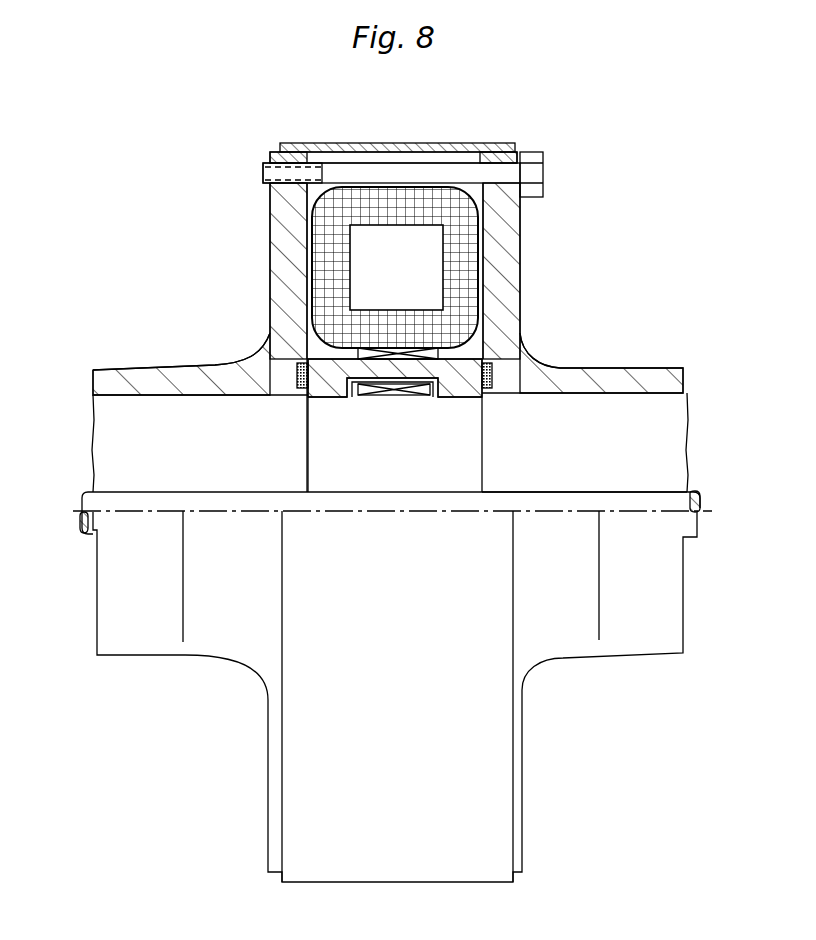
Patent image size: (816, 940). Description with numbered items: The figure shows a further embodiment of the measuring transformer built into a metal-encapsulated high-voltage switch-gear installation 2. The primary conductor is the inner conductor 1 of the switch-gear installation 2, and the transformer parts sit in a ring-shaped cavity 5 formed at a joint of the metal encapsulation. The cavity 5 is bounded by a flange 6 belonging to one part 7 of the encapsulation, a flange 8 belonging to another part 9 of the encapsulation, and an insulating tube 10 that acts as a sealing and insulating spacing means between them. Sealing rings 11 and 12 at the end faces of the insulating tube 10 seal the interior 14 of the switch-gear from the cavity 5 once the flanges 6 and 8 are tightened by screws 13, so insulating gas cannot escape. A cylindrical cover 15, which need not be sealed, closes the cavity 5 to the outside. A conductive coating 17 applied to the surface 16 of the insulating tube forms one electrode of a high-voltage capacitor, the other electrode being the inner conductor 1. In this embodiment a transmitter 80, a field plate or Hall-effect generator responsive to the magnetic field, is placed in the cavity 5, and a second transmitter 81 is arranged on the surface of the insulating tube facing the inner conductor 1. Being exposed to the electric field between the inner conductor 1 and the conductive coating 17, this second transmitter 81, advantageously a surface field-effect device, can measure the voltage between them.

The inner conductor 1 is at (670, 497).
The high-voltage switch-gear installation 2 is at (652, 405).
The ring-shaped cavity 5 is at (470, 343).
The flange 6 is at (502, 228).
The part of the metal encapsulation 7 is at (627, 377).
The flange 8 is at (285, 210).
The part of the metal encapsulation 9 is at (122, 380).
The insulating tube 10 is at (440, 357).
The sealing ring 11 is at (490, 373).
The sealing ring 12 is at (300, 375).
The screws 13 is at (403, 173).
The interior 14 is at (673, 433).
The cylindrical cover 15 is at (305, 145).
The surface of the insulating tube 16 is at (478, 395).
The conductive coating 17 is at (335, 398).
The transmitter 80 is at (440, 392).
The transmitter 81 is at (370, 397).